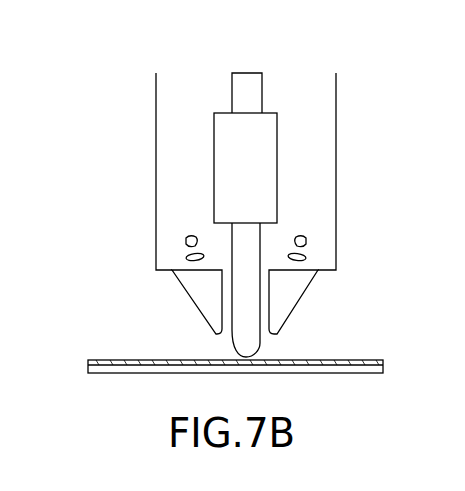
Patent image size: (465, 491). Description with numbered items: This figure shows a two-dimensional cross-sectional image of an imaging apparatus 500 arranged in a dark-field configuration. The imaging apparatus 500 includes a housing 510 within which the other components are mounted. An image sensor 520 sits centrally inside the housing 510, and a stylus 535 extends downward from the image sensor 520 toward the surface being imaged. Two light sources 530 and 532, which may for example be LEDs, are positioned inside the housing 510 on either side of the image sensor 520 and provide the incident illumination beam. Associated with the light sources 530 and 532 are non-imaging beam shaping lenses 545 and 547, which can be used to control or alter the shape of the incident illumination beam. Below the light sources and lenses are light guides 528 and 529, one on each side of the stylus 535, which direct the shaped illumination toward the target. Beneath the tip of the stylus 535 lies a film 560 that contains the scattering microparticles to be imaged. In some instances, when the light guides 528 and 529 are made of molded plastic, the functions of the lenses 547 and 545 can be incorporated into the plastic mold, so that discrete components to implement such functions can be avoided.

The imaging apparatus 500 is at (112, 50).
The housing 510 is at (145, 107).
The image sensor 520 is at (288, 157).
The light guide 528 is at (310, 299).
The light guide 529 is at (190, 303).
The light source 530 is at (322, 236).
The light source 532 is at (170, 236).
The stylus 535 is at (240, 336).
The non-imaging beam shaping lens 545 is at (322, 255).
The non-imaging beam shaping lens 547 is at (170, 255).
The film 560 is at (334, 352).